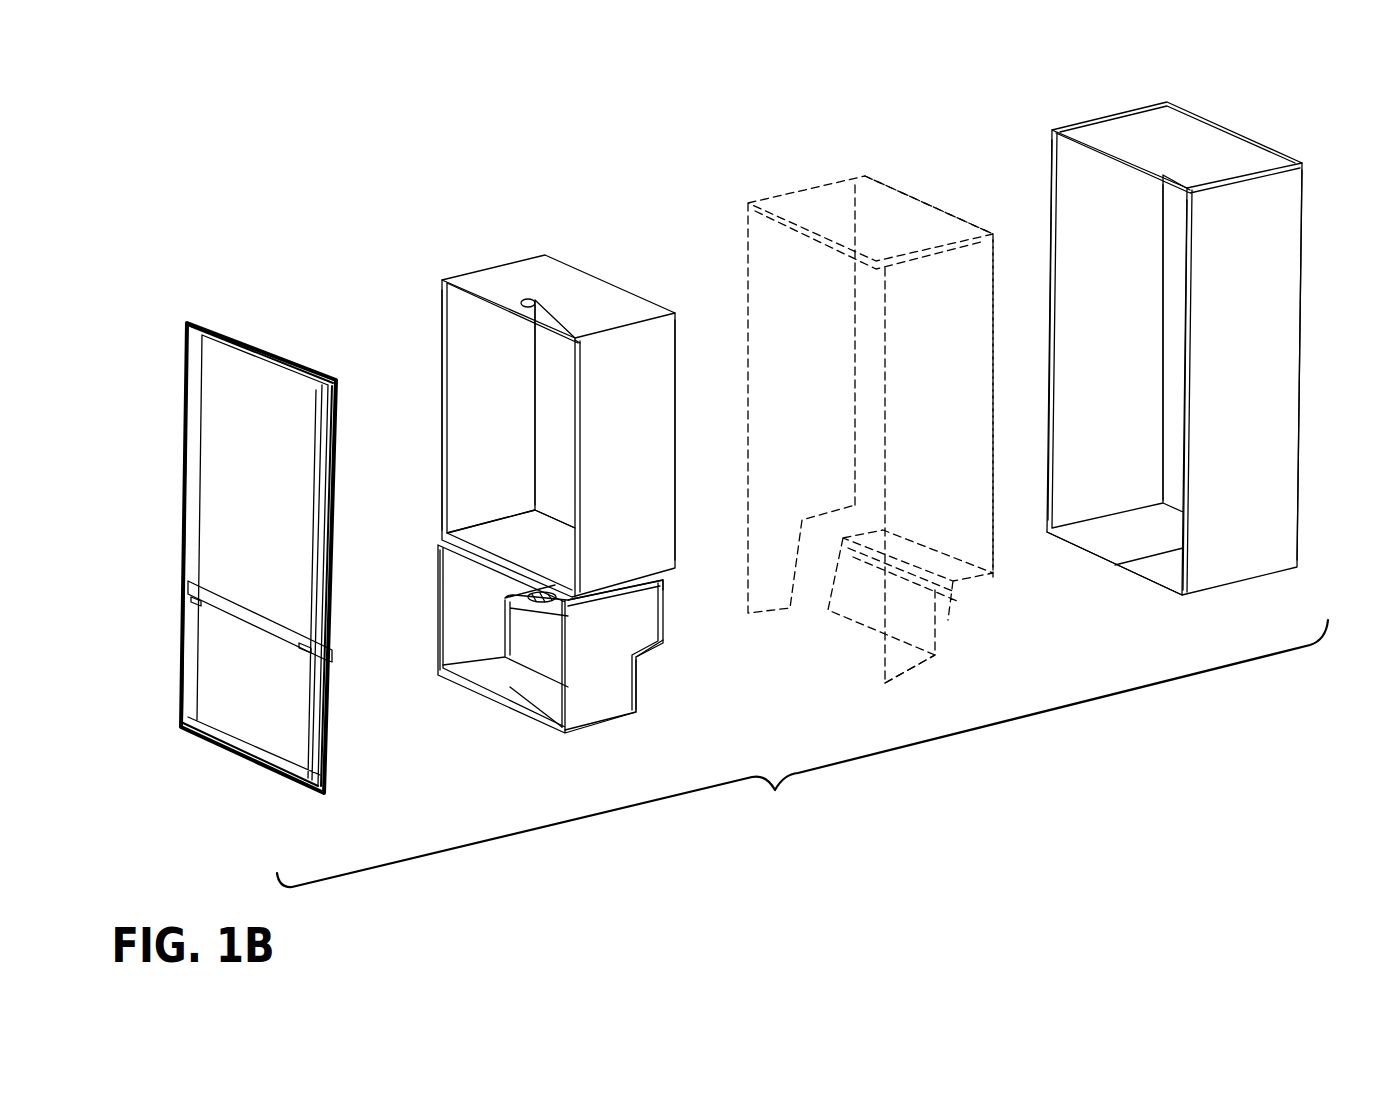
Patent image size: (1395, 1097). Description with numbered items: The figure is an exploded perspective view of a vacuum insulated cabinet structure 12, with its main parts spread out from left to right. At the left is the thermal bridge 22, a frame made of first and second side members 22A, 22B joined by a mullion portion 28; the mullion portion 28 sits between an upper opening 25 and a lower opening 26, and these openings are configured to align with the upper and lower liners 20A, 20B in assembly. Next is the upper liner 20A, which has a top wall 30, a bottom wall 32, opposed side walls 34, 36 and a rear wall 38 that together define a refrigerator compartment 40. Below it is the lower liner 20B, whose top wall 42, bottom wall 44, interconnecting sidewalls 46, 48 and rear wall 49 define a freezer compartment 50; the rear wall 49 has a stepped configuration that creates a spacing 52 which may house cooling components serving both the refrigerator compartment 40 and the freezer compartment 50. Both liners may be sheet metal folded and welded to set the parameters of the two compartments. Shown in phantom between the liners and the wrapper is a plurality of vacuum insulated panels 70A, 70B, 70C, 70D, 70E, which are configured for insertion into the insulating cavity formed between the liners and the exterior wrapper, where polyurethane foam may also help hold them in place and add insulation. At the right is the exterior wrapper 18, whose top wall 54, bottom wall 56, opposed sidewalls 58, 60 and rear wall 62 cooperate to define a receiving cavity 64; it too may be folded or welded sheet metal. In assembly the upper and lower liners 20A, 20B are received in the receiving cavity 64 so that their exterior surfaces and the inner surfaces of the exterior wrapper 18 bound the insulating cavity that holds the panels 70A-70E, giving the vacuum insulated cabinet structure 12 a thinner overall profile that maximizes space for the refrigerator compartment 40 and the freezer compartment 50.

The vacuum insulated cabinet structure 12 is at (802, 753).
The exterior wrapper 18 is at (1085, 108).
The upper liner 20A is at (455, 271).
The lower liner 20B is at (432, 622).
The thermal bridge 22 is at (152, 372).
The first side member 22A is at (178, 491).
The second side member 22B is at (311, 447).
The upper opening 25 is at (192, 332).
The lower opening 26 is at (180, 680).
The mullion portion 28 is at (233, 623).
The top wall 30 is at (582, 298).
The bottom wall 32 is at (498, 533).
The side wall 34 is at (470, 450).
The side wall 36 is at (660, 412).
The rear wall 38 is at (558, 356).
The refrigerator compartment 40 is at (516, 423).
The top wall 42 is at (650, 575).
The bottom wall 44 is at (488, 670).
The sidewall 46 is at (466, 590).
The sidewall 48 is at (600, 703).
The rear wall 49 is at (598, 692).
The freezer compartment 50 is at (540, 645).
The spacing 52 is at (652, 653).
The top wall 54 is at (1192, 130).
The bottom wall 56 is at (1163, 572).
The sidewall 58 is at (1074, 170).
The sidewall 60 is at (1273, 458).
The rear wall 62 is at (1172, 308).
The receiving cavity 64 is at (1128, 352).
The vacuum insulated panel 70A is at (745, 292).
The vacuum insulated panel 70B is at (878, 222).
The vacuum insulated panel 70C is at (972, 328).
The vacuum insulated panel 70D is at (990, 585).
The vacuum insulated panel 70E is at (950, 640).